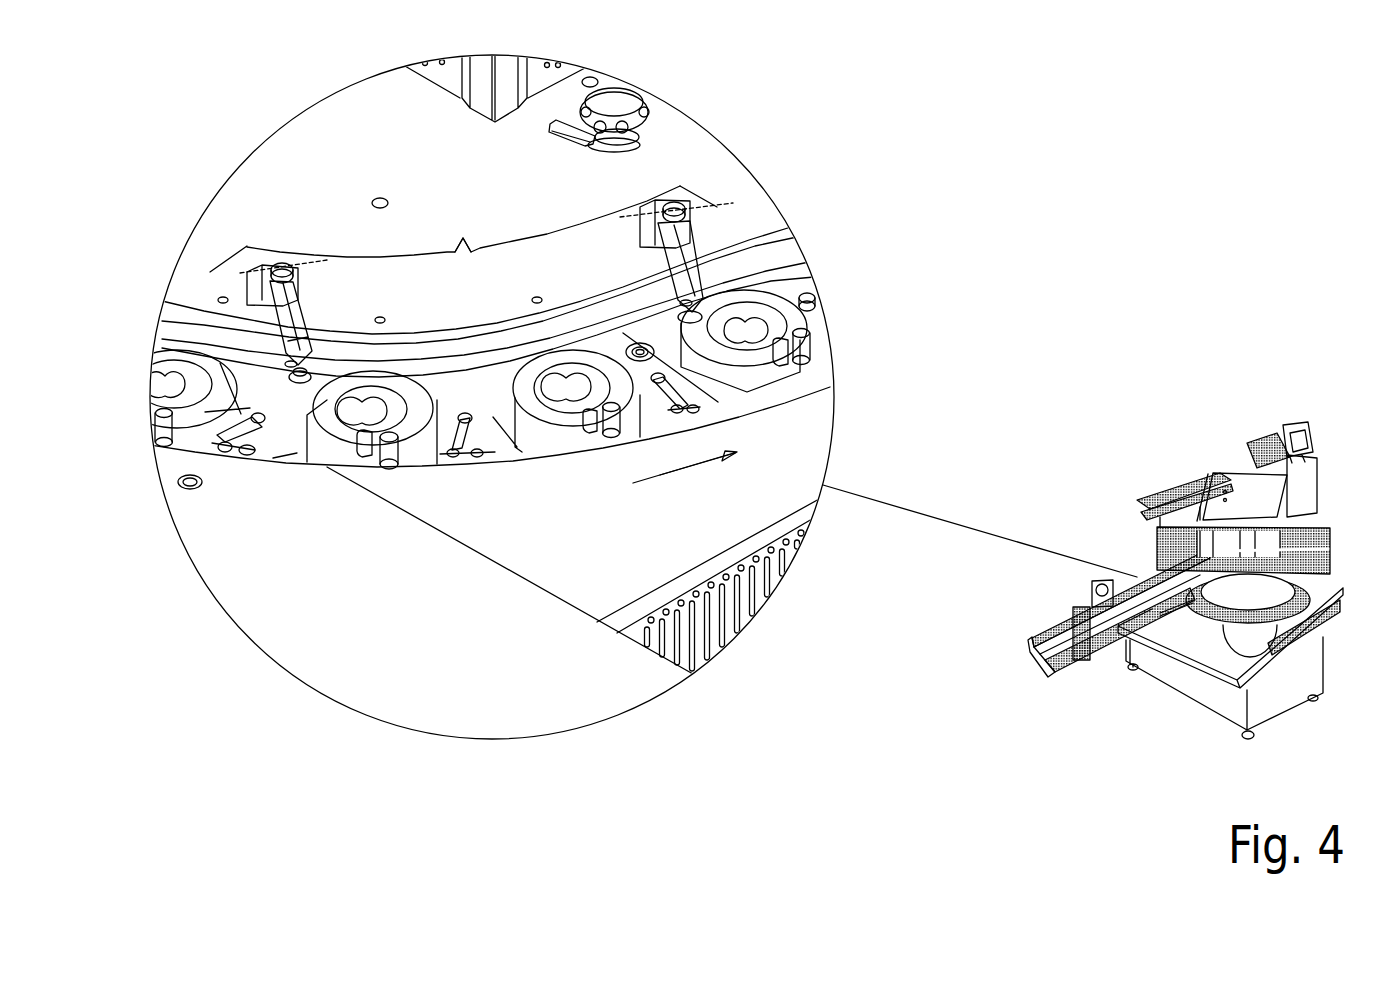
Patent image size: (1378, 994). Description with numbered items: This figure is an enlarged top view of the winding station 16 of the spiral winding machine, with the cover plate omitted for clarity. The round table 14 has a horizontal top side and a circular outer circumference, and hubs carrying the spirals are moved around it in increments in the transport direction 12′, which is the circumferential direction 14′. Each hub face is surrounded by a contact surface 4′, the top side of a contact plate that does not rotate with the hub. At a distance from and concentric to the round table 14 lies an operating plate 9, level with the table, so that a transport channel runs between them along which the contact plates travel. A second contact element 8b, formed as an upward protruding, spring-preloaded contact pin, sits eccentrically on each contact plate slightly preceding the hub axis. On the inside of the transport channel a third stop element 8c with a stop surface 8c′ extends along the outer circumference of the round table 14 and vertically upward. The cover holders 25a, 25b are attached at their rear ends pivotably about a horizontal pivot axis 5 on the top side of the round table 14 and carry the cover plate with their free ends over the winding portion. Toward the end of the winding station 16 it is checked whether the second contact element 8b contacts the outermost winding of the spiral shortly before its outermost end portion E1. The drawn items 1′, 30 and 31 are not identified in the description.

The transport table 1′ is at (320, 453).
The contact surface 4′ is at (550, 433).
The horizontal pivot axis 5 is at (311, 266).
The second contact element 8b is at (387, 450).
The third stop element 8c is at (430, 350).
The stop surface 8c′ is at (497, 358).
The operating plate 9 is at (504, 582).
The transport direction 12′ is at (697, 483).
The round table 14 is at (449, 254).
The circumferential direction 14′ is at (690, 477).
The winding station 16 is at (468, 231).
The cover holder 25a is at (297, 325).
The cover holder 25b is at (672, 240).
The clamping knob 30 is at (618, 108).
The fastening screw 31 is at (282, 262).
The outermost end portion E1 is at (370, 447).